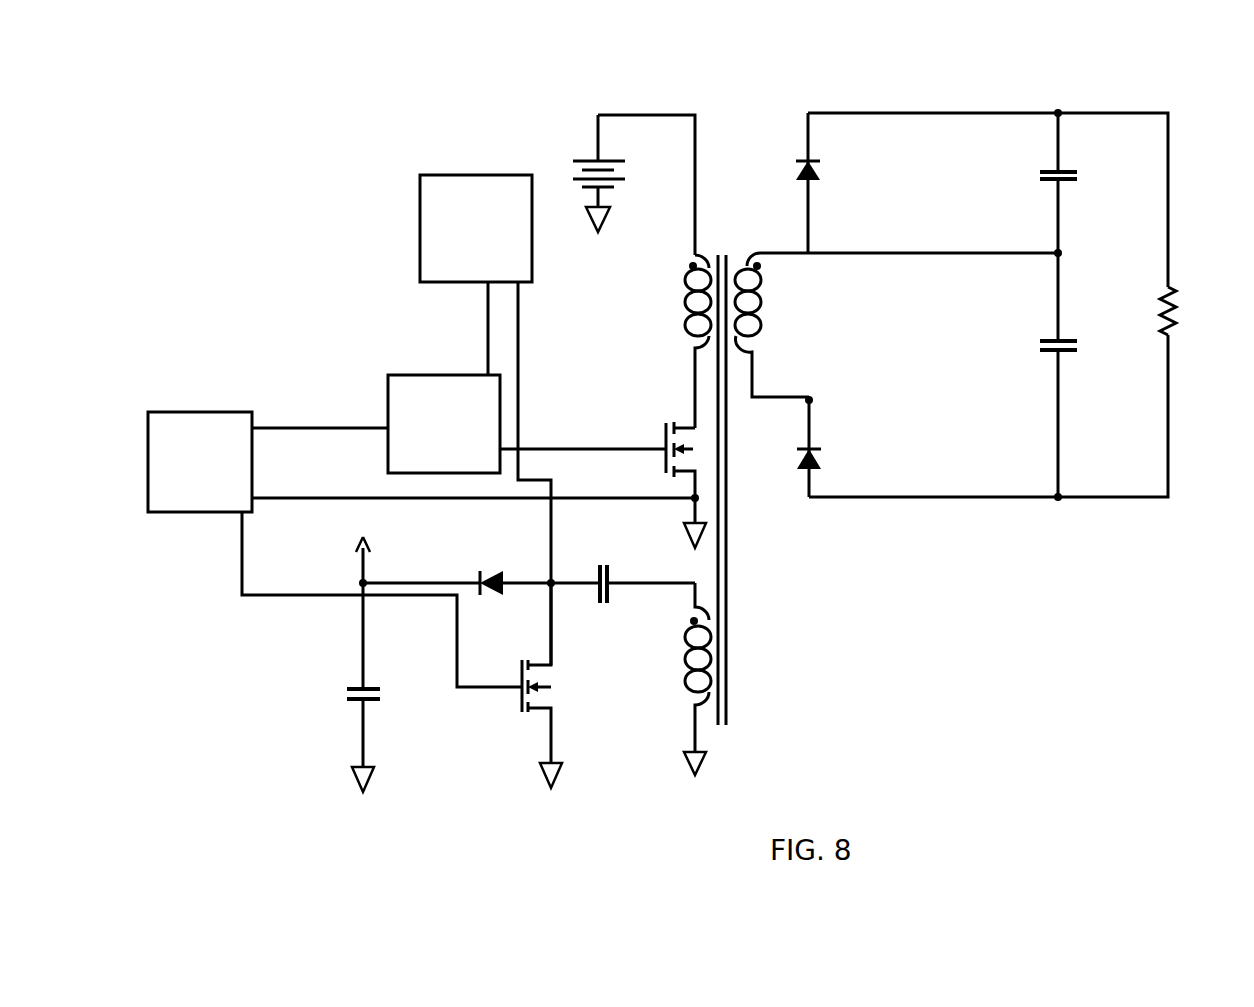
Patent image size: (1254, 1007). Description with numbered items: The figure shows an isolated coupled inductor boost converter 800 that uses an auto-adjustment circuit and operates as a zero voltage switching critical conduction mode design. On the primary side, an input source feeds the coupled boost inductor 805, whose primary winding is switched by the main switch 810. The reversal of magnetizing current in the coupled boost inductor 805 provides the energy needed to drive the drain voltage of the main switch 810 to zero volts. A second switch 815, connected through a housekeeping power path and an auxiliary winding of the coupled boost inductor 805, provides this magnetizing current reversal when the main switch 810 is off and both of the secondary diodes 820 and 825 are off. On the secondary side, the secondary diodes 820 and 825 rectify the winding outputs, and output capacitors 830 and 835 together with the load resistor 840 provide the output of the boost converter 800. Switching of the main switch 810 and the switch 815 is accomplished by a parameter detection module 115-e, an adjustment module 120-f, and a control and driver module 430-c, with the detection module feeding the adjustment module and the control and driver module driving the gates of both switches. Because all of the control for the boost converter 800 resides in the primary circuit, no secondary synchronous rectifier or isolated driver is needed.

The isolated coupled inductor boost converter 800 is at (1136, 778).
The parameter detection module 115-e is at (433, 175).
The adjustment module 120-f is at (432, 375).
The control and driver module 430-c is at (147, 432).
The coupled boost inductor 805 is at (728, 253).
The main switch 810 is at (665, 433).
The switch 815 is at (520, 680).
The secondary diode 820 is at (805, 160).
The secondary diode 825 is at (822, 447).
The output capacitor 830 is at (1043, 172).
The output capacitor 835 is at (1043, 341).
The load resistor 840 is at (1165, 290).